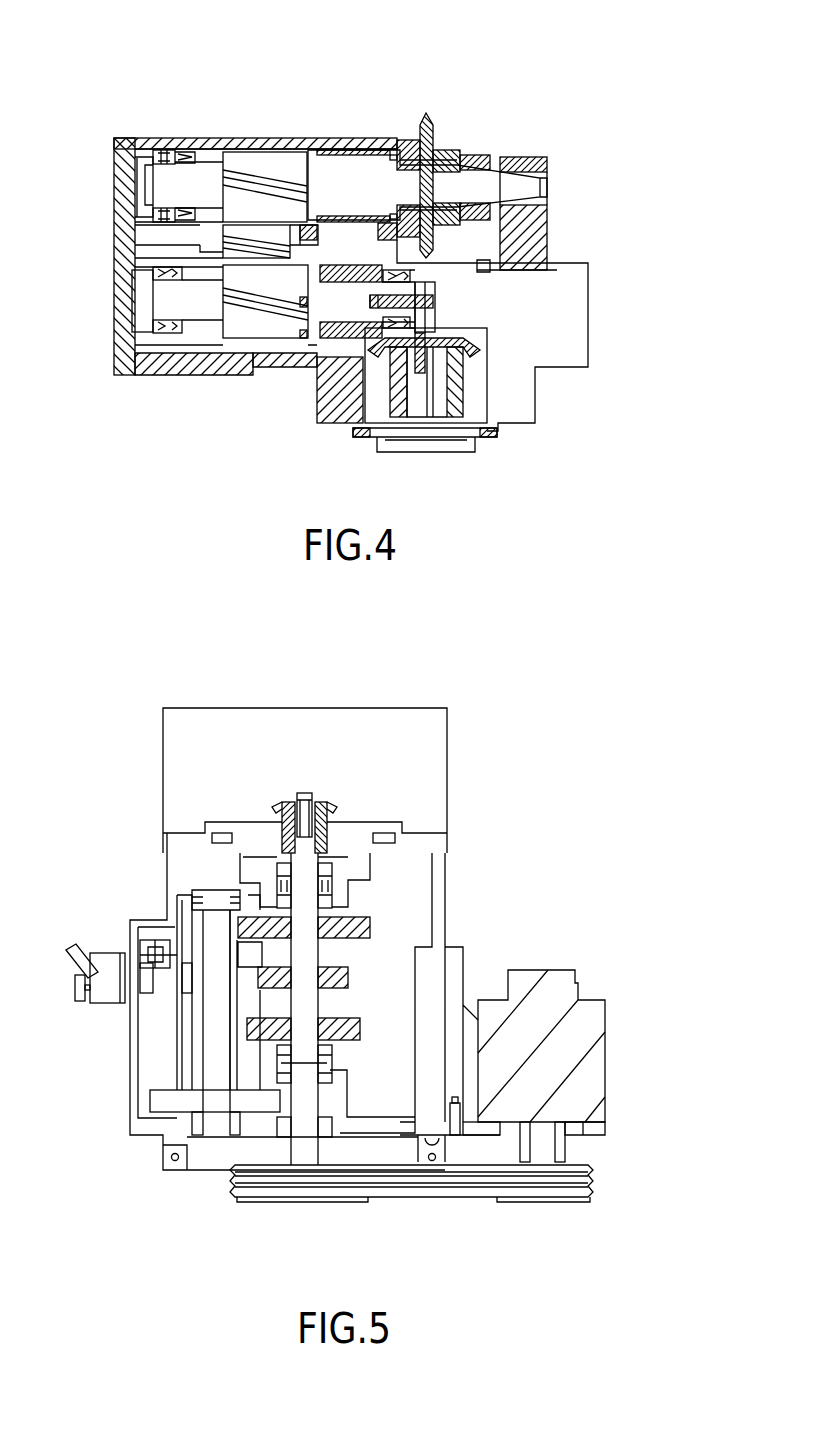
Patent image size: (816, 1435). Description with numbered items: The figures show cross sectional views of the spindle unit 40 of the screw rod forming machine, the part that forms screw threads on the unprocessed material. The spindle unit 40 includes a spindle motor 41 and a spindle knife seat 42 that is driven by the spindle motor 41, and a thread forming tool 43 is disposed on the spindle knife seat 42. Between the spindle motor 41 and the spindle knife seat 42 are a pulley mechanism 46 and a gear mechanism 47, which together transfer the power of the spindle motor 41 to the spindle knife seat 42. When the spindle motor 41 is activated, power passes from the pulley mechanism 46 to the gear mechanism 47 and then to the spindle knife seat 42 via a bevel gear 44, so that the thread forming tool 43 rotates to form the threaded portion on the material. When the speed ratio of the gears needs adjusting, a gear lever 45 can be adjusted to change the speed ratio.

In FIG. 4, the spindle unit 40 is at (233, 134).
In FIG. 5, the spindle unit 40 is at (610, 1079).
In FIG. 5, the spindle motor 41 is at (589, 1018).
In FIG. 4, the spindle knife seat 42 is at (343, 177).
In FIG. 4, the thread forming tool 43 is at (433, 124).
In FIG. 4, the bevel gear 44 is at (457, 383).
In FIG. 5, the bevel gear 44 is at (332, 807).
In FIG. 5, the gear lever 45 is at (110, 997).
In FIG. 5, the pulley mechanism 46 is at (300, 1190).
In FIG. 5, the gear mechanism 47 is at (368, 973).